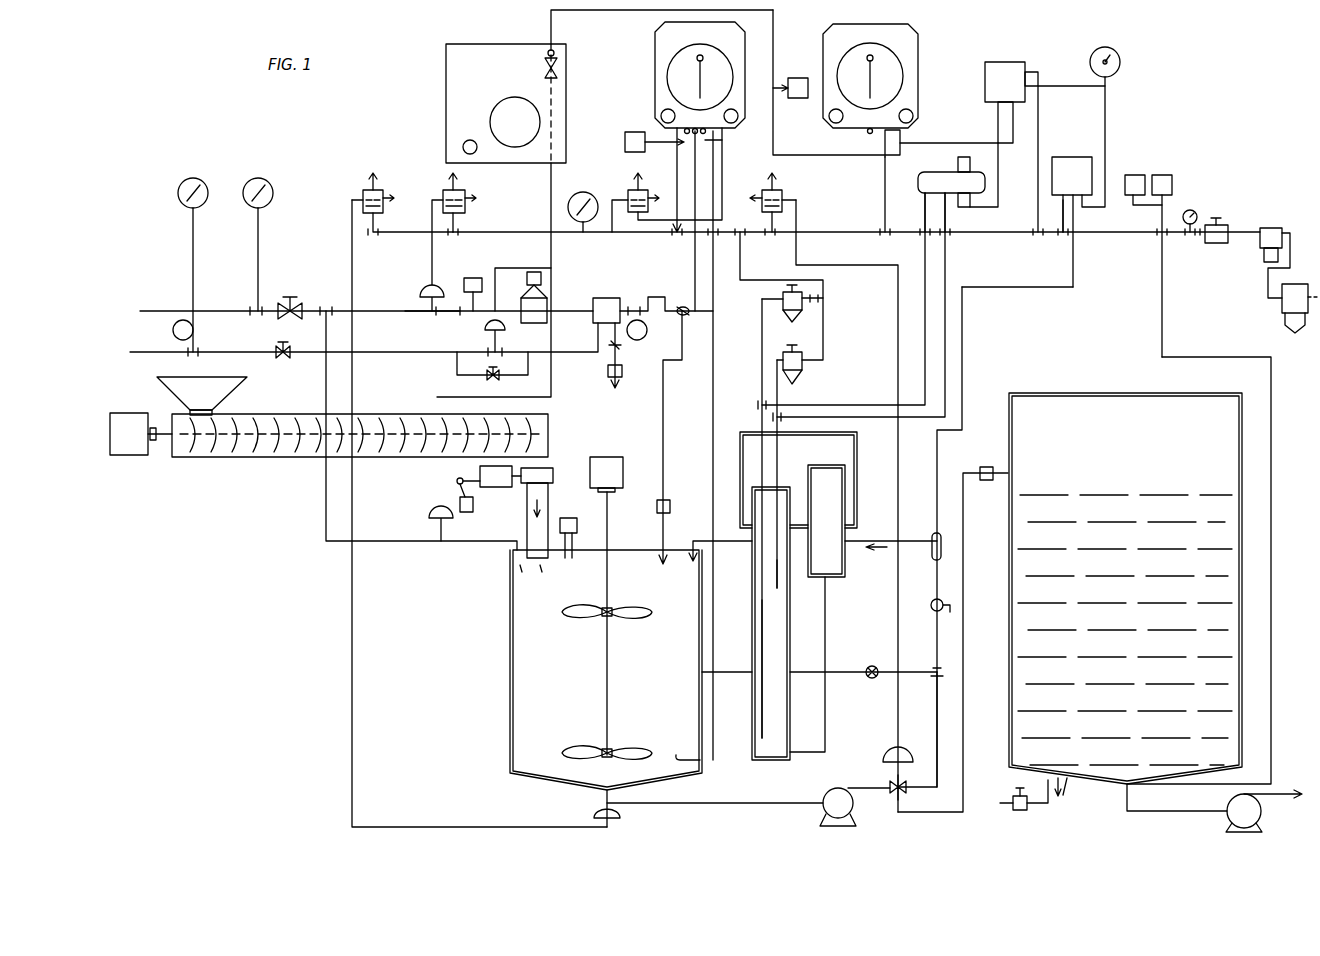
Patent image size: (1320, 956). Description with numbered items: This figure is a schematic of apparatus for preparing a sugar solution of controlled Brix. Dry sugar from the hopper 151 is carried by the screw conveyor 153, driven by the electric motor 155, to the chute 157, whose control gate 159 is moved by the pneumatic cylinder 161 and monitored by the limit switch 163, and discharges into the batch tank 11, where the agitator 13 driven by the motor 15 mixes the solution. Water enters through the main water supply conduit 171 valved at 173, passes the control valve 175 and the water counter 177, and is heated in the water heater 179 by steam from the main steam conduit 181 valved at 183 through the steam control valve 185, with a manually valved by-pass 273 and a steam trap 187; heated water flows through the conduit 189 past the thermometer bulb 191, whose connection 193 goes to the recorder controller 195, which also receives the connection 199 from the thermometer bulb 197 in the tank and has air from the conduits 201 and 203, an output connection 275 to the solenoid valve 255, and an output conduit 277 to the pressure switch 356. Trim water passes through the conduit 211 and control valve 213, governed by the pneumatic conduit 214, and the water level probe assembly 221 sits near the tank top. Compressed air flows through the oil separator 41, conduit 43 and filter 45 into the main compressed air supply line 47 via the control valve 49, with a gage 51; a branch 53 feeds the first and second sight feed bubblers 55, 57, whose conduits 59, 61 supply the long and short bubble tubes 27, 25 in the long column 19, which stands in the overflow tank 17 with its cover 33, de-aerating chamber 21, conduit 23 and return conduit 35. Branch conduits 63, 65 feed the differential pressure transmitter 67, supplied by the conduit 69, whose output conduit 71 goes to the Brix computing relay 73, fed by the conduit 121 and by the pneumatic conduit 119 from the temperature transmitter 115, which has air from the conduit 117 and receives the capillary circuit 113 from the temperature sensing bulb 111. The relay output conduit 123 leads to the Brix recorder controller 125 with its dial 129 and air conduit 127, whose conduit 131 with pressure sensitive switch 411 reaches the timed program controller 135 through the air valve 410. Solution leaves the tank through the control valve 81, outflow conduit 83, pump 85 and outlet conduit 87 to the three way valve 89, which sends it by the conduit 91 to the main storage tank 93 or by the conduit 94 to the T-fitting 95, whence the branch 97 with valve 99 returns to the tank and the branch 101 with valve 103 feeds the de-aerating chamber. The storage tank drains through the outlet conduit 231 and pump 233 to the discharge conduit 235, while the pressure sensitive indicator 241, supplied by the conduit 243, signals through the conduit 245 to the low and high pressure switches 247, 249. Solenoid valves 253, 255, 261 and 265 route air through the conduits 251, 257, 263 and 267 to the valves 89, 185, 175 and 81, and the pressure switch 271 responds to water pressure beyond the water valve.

The batch tank 11 is at (510, 654).
The agitator 13 is at (608, 670).
The motor 15 is at (604, 458).
The overflow tank 17 is at (857, 448).
The long column 19 is at (752, 577).
The de-aerating chamber 21 is at (840, 560).
The conduit 23 is at (826, 605).
The short bubble tube 25 is at (779, 586).
The long bubble tube 27 is at (762, 620).
The cover 33 is at (765, 425).
The return conduit 35 is at (709, 539).
The oil separator 41 is at (1283, 312).
The conduit 43 is at (1282, 292).
The filter 45 is at (1270, 228).
The main compressed air supply line 47 is at (520, 232).
The control valve 49 is at (1220, 225).
The gage 51 is at (1186, 210).
The branch 53 is at (745, 282).
The first sight feed bubbler 55 is at (803, 300).
The second sight feed bubbler 57 is at (802, 363).
The conduit 59 is at (762, 381).
The conduit 61 is at (779, 448).
The branch conduit 63 is at (890, 405).
The branch conduit 65 is at (950, 372).
The differential pressure transmitter 67 is at (945, 172).
The conduit 69 is at (972, 212).
The output conduit 71 is at (998, 192).
The Brix computing relay 73 is at (1000, 64).
The control valve 81 is at (598, 813).
The outflow conduit 83 is at (700, 803).
The pump 85 is at (823, 807).
The outlet conduit 87 is at (880, 768).
The three way valve 89 is at (892, 793).
The conduit 91 is at (963, 718).
The main storage tank 93 is at (1242, 562).
The conduit 94 is at (937, 712).
The T-fitting 95 is at (936, 668).
The branch 97 is at (814, 672).
The valve 99 is at (871, 678).
The branch 101 is at (873, 541).
The valve 103 is at (943, 600).
The temperature sensing bulb 111 is at (932, 553).
The capillary circuit 113 is at (962, 322).
The temperature transmitter 115 is at (1085, 157).
The conduit 117 is at (1063, 238).
The pneumatic conduit 119 is at (1105, 126).
The conduit 121 is at (1038, 120).
The output conduit 123 is at (985, 143).
The Brix recorder controller 125 is at (823, 30).
The pneumatic conduit 127 is at (885, 192).
The dial 129 is at (890, 62).
The conduit 131 is at (840, 155).
The timed program controller 135 is at (460, 46).
The hopper 151 is at (228, 380).
The screw conveyor 153 is at (250, 458).
The electric motor 155 is at (137, 413).
The chute 157 is at (525, 558).
The control gate 159 is at (553, 468).
The pneumatic cylinder 161 is at (496, 487).
The limit switch 163 is at (467, 512).
The main water supply conduit 171 is at (238, 311).
The valve 173 is at (296, 304).
The control valve 175 is at (416, 310).
The water counter 177 is at (530, 325).
The water heater 179 is at (593, 300).
The main steam conduit 181 is at (140, 352).
The valve 183 is at (276, 349).
The steam control valve 185 is at (482, 350).
The steam trap 187 is at (608, 376).
The conduit 189 is at (663, 398).
The thermometer bulb 191 is at (681, 308).
The connection 193 is at (722, 140).
The recorder controller 195 is at (655, 40).
The thermometer bulb 197 is at (680, 757).
The connection 199 is at (713, 170).
The conduit 201 is at (714, 207).
The conduit 203 is at (677, 175).
The conduit 211 is at (326, 506).
The control valve 213 is at (443, 543).
The pneumatic conduit 214 is at (551, 192).
The water level probe assembly 221 is at (568, 518).
The outlet conduit 231 is at (1160, 811).
The pump 233 is at (1227, 815).
The discharge conduit 235 is at (1278, 790).
The pressure sensitive indicator 241 is at (1067, 784).
The supply conduit 243 is at (1048, 802).
The conduit 245 is at (1271, 486).
The low pressure switch 247 is at (1162, 175).
The high pressure switch 249 is at (1133, 175).
The pneumatic conduit 251 is at (898, 350).
The solenoid controlled valve 253 is at (781, 193).
The solenoid valve 255 is at (628, 192).
The conduit 257 is at (495, 268).
The solenoid controlled valve 261 is at (462, 192).
The conduit 263 is at (430, 232).
The solenoid operated valve 265 is at (363, 192).
The conduit 267 is at (352, 600).
The pressure switch 271 is at (425, 287).
The by-pass 273 is at (457, 368).
The connection 275 is at (660, 222).
The output conduit 277 is at (685, 131).
The pressure switch 356 is at (625, 148).
The air valve 410 is at (544, 68).
The pressure sensitive switch 411 is at (800, 74).